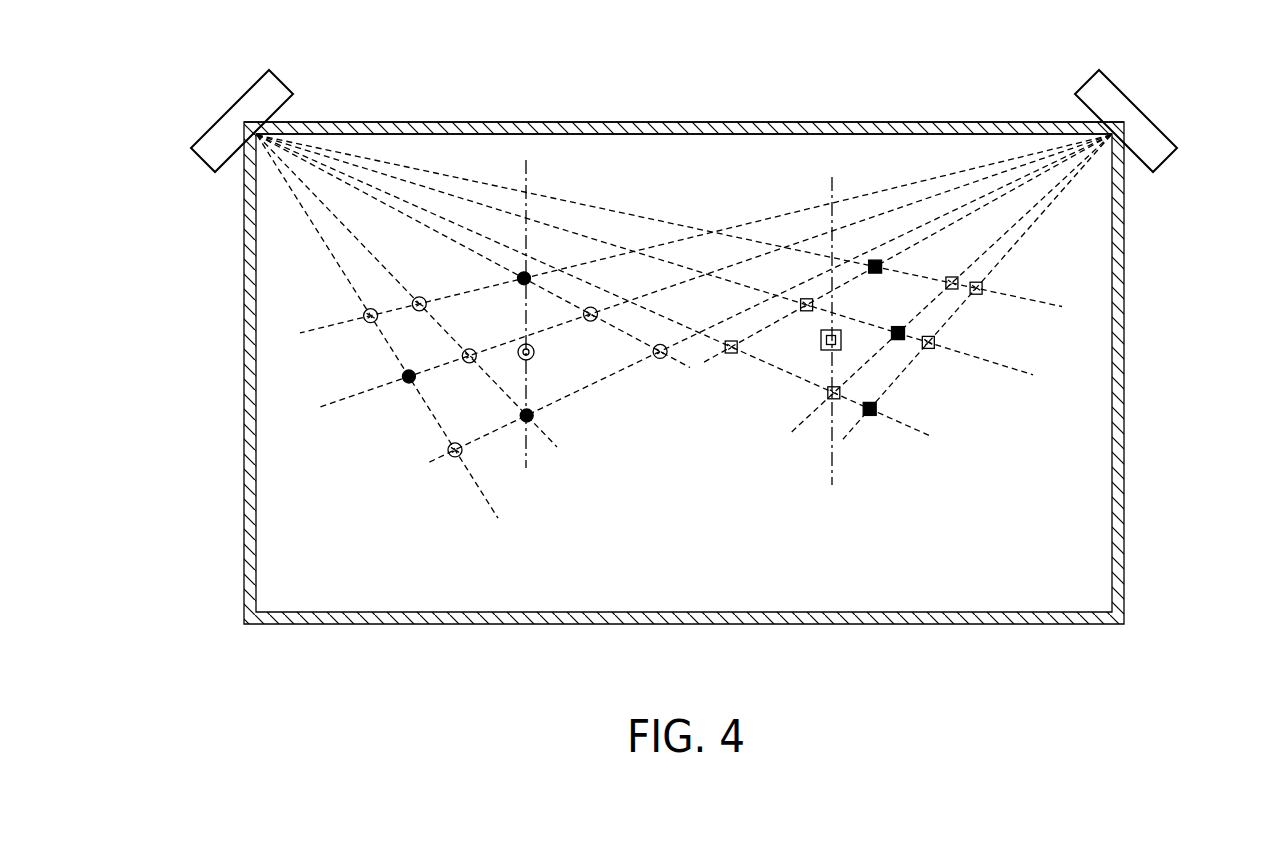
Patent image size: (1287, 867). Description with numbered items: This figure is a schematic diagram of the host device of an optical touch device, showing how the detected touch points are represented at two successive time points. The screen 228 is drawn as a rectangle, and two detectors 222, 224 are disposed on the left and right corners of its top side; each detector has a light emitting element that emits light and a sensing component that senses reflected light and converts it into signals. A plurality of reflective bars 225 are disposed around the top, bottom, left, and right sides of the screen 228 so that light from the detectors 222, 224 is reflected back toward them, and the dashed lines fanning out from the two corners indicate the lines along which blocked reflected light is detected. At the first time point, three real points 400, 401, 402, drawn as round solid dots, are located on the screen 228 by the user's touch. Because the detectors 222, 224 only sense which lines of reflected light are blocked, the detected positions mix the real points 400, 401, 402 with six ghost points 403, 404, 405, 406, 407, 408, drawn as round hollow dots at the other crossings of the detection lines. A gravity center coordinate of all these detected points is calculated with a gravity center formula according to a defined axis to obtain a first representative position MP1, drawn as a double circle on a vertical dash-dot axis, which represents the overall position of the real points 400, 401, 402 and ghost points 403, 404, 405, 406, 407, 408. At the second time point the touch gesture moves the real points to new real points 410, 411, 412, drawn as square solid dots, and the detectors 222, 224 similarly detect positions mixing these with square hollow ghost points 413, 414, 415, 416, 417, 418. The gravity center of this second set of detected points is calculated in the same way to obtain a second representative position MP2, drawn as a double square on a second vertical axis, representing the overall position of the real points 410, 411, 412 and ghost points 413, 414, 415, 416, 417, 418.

The detector 222 is at (227, 112).
The detector 224 is at (1143, 112).
The reflective bars 225 is at (1126, 331).
The screen 228 is at (821, 121).
The real point 400 is at (518, 277).
The real point 401 is at (409, 384).
The real point 402 is at (533, 419).
The ghost point 403 is at (427, 308).
The ghost point 404 is at (366, 322).
The ghost point 405 is at (594, 307).
The ghost point 406 is at (470, 363).
The ghost point 407 is at (662, 358).
The ghost point 408 is at (455, 458).
The first representative position MP1 is at (535, 352).
The real point 410 is at (875, 259).
The real point 411 is at (898, 340).
The real point 412 is at (869, 416).
The ghost point 413 is at (802, 298).
The ghost point 414 is at (729, 354).
The ghost point 415 is at (953, 290).
The ghost point 416 is at (830, 400).
The ghost point 417 is at (983, 286).
The ghost point 418 is at (930, 350).
The second representative position MP2 is at (820, 344).